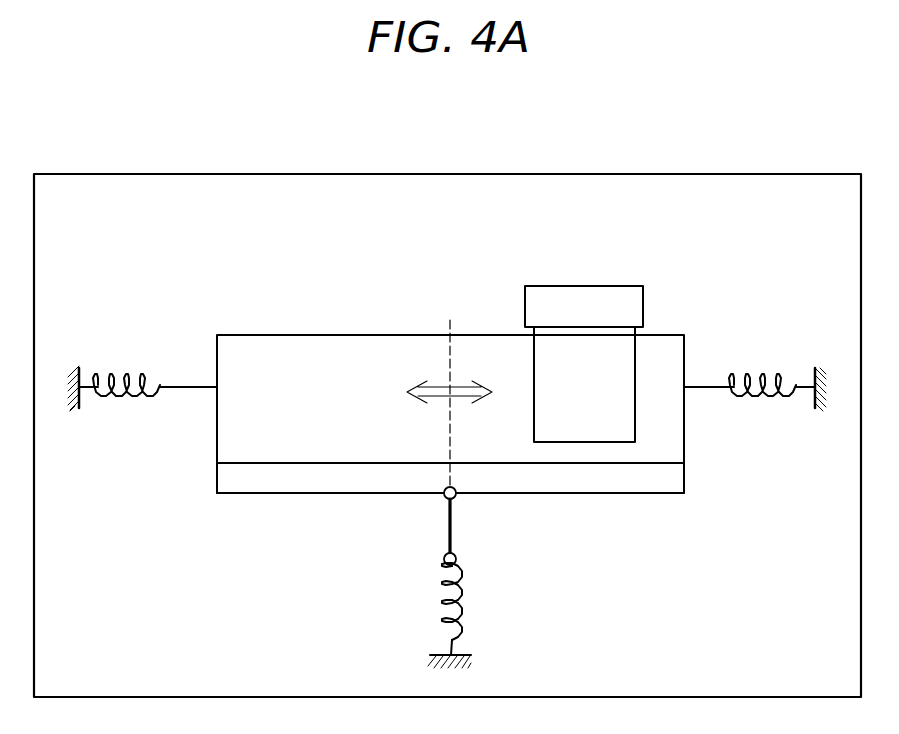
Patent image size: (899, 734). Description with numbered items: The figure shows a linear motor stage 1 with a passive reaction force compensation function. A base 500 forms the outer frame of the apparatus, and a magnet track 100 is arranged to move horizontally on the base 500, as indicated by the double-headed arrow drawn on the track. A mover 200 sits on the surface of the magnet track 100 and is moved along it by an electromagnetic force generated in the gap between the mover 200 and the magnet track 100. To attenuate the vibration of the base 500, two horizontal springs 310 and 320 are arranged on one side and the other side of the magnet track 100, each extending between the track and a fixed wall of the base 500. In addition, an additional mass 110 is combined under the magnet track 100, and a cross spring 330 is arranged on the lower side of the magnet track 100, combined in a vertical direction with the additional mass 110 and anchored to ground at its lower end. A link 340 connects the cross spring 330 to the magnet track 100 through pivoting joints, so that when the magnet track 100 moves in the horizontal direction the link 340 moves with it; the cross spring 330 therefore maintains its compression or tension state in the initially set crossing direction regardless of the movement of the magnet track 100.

The linear motor stage 1 is at (124, 121).
The base 500 is at (452, 173).
The magnet track 100 is at (330, 357).
The additional mass 110 is at (293, 478).
The mover 200 is at (587, 276).
The horizontal spring 310 is at (116, 372).
The horizontal spring 320 is at (763, 372).
The cross spring 330 is at (463, 603).
The link 340 is at (454, 523).